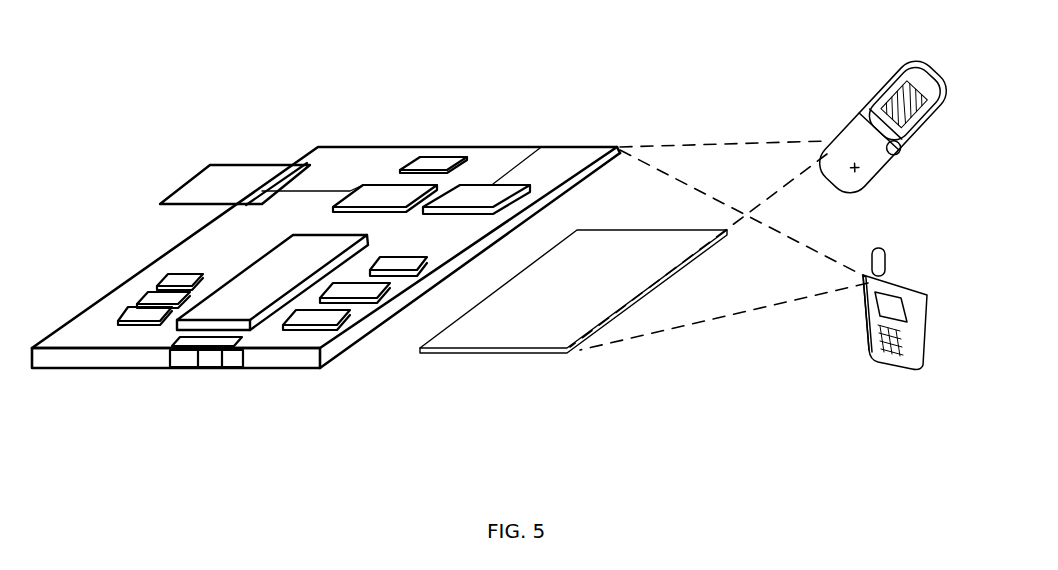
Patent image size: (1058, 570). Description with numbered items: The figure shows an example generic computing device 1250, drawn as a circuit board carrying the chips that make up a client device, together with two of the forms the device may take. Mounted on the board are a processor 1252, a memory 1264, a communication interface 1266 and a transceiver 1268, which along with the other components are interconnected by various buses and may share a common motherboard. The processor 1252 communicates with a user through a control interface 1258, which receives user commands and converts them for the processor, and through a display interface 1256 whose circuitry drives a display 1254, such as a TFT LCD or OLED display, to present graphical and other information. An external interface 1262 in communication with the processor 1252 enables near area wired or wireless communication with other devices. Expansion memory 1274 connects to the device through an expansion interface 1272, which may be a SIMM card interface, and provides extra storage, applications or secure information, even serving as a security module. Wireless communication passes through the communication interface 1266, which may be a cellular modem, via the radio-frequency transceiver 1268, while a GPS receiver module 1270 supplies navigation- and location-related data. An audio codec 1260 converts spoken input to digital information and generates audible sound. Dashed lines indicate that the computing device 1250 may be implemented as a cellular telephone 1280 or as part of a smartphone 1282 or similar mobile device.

The computing device 1250 is at (296, 110).
The processor 1252 is at (242, 366).
The display 1254 is at (566, 352).
The display interface 1256 is at (340, 356).
The control interface 1258 is at (384, 328).
The audio codec 1260 is at (399, 306).
The external interface 1262 is at (199, 368).
The memory 1264 is at (137, 297).
The communication interface 1266 is at (383, 193).
The transceiver 1268 is at (477, 192).
The GPS receiver module 1270 is at (430, 156).
The expansion interface 1272 is at (295, 163).
The expansion memory 1274 is at (210, 164).
The cellular telephone 1280 is at (895, 70).
The smartphone 1282 is at (870, 250).